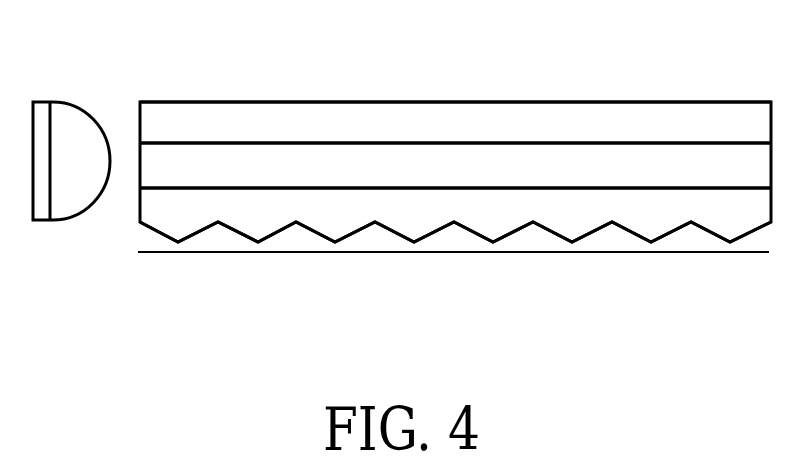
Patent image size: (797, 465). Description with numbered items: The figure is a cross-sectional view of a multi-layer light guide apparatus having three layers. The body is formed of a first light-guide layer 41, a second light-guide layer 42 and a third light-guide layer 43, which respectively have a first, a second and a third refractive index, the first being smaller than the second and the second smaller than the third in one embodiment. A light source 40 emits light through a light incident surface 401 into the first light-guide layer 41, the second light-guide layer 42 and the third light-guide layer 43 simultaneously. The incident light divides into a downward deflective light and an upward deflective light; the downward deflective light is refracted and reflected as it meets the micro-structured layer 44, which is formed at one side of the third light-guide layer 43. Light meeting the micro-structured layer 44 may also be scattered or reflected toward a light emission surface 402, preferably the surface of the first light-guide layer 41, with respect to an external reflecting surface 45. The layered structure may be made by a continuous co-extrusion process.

The light source 40 is at (63, 107).
The light incident surface 401 is at (140, 200).
The light emission surface 402 is at (365, 100).
The first light-guide layer 41 is at (510, 115).
The second light-guide layer 42 is at (588, 163).
The third light-guide layer 43 is at (662, 208).
The micro-structured layer 44 is at (330, 232).
The external reflecting surface 45 is at (550, 254).